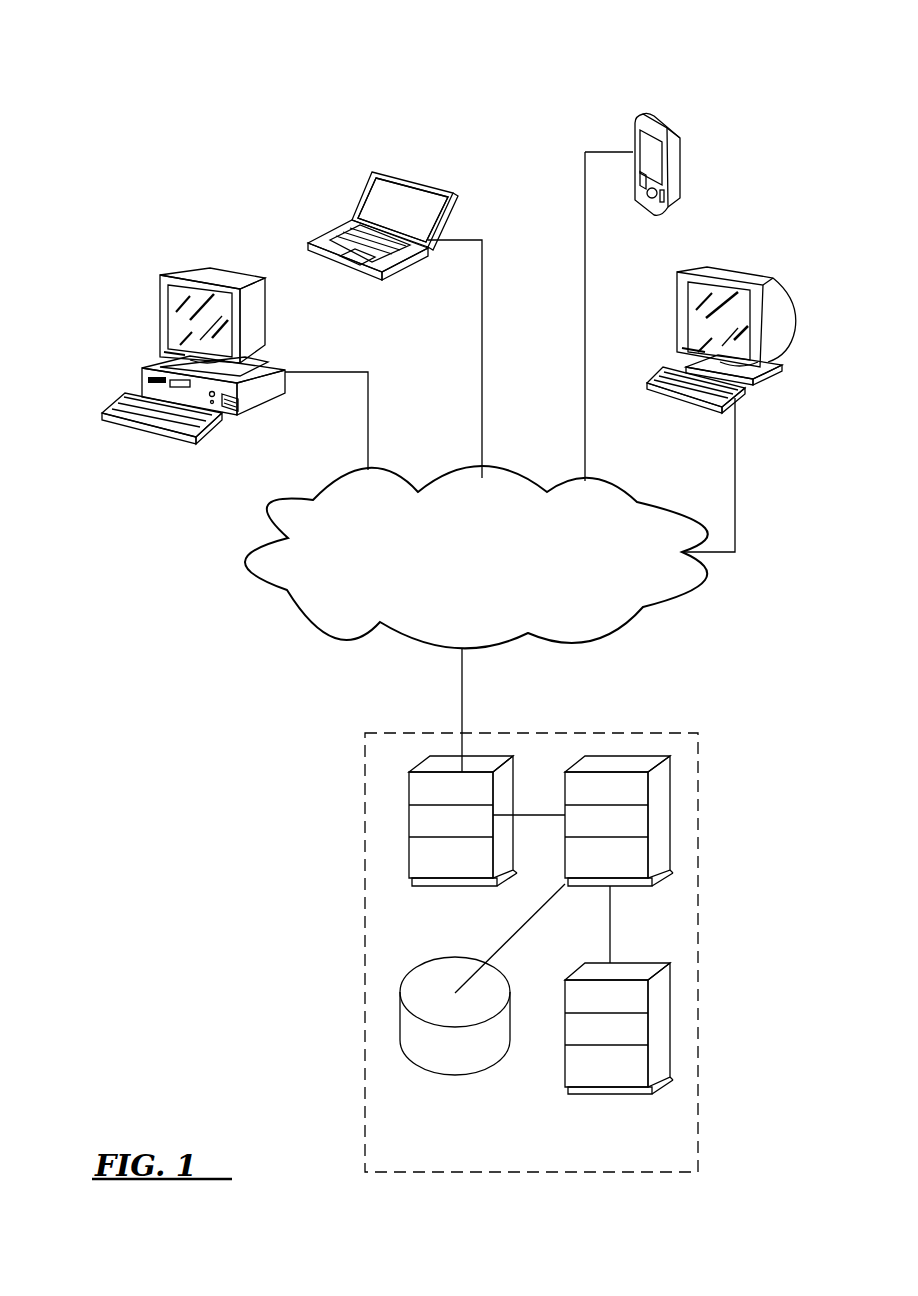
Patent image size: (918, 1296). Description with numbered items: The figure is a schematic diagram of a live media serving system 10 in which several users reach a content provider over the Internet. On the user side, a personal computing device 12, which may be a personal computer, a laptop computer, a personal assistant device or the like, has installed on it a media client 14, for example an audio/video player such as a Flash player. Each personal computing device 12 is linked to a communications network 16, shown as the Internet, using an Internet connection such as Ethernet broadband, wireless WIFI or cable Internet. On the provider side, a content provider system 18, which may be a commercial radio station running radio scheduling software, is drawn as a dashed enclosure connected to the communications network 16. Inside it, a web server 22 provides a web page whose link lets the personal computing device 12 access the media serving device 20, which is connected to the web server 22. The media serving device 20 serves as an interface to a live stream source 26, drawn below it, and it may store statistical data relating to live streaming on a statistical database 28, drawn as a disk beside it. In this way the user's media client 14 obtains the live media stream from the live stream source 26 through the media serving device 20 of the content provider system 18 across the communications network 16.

The system 10 is at (745, 56).
The personal computing device 12 is at (160, 312).
The media client 14 is at (408, 206).
The communications network 16 is at (245, 566).
The content provider system 18 is at (702, 744).
The media serving device 20 is at (673, 815).
The web server 22 is at (409, 818).
The live stream source 26 is at (673, 1022).
The statistical database 28 is at (400, 1012).